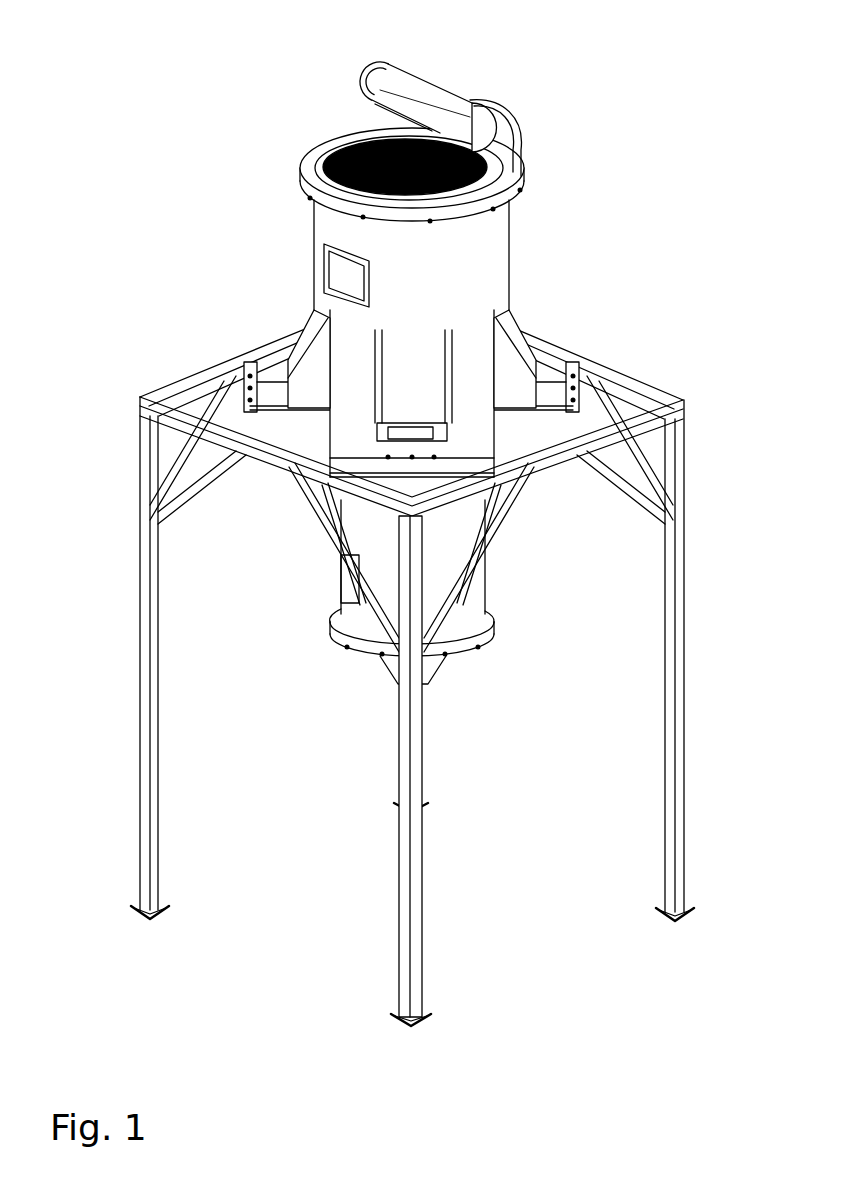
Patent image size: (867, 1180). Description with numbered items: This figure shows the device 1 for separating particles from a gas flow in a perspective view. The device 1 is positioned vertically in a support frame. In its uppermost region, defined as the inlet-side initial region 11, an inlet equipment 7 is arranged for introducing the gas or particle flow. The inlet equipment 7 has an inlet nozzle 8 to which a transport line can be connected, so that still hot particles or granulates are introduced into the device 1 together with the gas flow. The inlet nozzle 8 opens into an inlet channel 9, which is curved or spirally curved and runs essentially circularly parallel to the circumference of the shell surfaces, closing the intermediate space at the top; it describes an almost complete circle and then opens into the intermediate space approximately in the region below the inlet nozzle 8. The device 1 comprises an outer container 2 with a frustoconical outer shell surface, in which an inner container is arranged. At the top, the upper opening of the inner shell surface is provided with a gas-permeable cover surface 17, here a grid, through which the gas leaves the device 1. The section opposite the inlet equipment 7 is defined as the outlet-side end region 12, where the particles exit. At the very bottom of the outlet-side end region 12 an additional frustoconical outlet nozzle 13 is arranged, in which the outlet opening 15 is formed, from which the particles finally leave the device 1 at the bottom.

The device 1 is at (393, 513).
The outer container 2 is at (487, 275).
The inlet equipment 7 is at (534, 81).
The inlet nozzle 8 is at (417, 90).
The inlet channel 9 is at (510, 138).
The inlet-side initial region 11 is at (284, 139).
The outlet-side end region 12 is at (412, 603).
The outlet nozzle 13 is at (437, 662).
The outlet opening 15 is at (400, 680).
The gas-permeable cover surface 17 is at (347, 143).